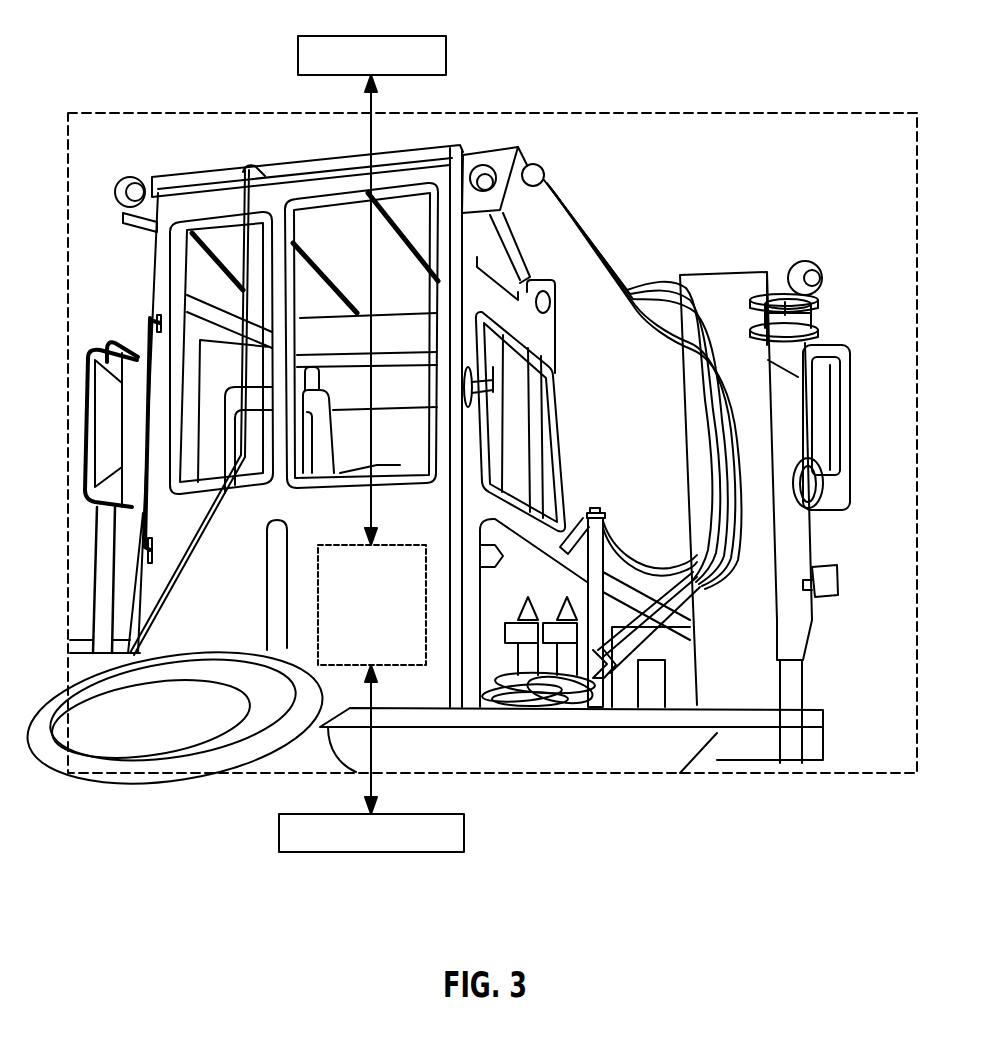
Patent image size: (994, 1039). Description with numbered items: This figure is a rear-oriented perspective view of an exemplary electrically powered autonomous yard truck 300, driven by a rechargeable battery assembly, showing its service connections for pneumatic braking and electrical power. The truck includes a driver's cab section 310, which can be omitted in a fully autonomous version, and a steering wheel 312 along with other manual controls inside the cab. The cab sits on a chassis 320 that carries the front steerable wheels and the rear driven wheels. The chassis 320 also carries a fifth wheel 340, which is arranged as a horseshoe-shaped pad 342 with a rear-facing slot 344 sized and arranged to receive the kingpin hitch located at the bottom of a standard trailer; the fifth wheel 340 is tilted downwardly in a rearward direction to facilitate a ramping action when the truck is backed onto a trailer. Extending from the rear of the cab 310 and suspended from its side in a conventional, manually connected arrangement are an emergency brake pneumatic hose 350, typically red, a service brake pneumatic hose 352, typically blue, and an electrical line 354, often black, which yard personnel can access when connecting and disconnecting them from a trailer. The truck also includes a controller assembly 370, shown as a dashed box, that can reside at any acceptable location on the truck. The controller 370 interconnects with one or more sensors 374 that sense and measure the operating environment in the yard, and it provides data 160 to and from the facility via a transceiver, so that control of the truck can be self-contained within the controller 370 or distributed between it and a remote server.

The data 160 is at (372, 37).
The yard truck 300 is at (403, 136).
The driver's cab section 310 is at (385, 265).
The steering wheel 312 is at (387, 467).
The chassis 320 is at (778, 763).
The fifth wheel 340 is at (190, 727).
The horseshoe-shaped pad 342 is at (142, 727).
The rear-facing slot 344 is at (83, 750).
The emergency brake pneumatic hose 350 is at (618, 522).
The service brake pneumatic hose 352 is at (640, 562).
The electrical line 354 is at (641, 640).
The controller assembly 370 is at (398, 670).
The sensors 374 is at (373, 853).